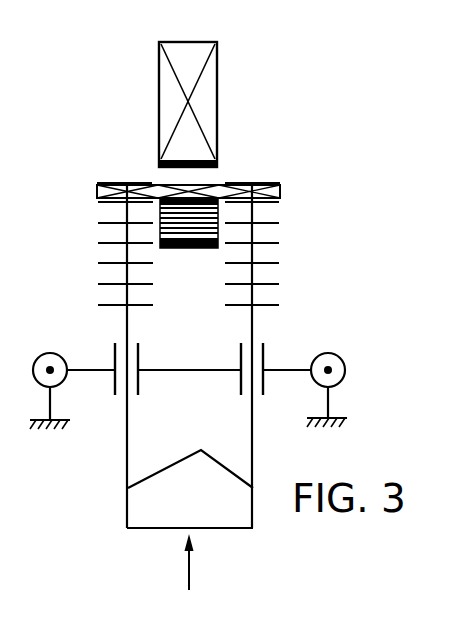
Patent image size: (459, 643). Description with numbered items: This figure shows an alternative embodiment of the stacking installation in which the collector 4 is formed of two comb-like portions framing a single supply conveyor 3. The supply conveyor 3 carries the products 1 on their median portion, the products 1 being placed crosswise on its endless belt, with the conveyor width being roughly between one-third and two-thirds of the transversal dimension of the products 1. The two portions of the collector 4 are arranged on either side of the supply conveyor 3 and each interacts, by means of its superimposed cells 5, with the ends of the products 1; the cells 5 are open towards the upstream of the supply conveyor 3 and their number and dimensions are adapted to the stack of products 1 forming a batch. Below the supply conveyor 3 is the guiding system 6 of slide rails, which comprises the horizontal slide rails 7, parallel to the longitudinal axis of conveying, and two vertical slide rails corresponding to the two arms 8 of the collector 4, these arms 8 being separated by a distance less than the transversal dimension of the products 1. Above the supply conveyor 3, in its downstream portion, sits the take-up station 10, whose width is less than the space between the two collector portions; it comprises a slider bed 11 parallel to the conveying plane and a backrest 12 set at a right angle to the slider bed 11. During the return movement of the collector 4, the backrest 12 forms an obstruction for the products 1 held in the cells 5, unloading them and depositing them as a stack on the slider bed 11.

The products 1 is at (145, 193).
The supply conveyor 3 is at (195, 247).
The collector 4 is at (83, 228).
The cells 5 is at (110, 296).
The system of slide rails 6 is at (284, 344).
The slide rails 7 is at (48, 367).
The arms 8 is at (190, 455).
The take-up station 10 is at (199, 96).
The slider bed 11 is at (203, 157).
The backrest 12 is at (170, 83).